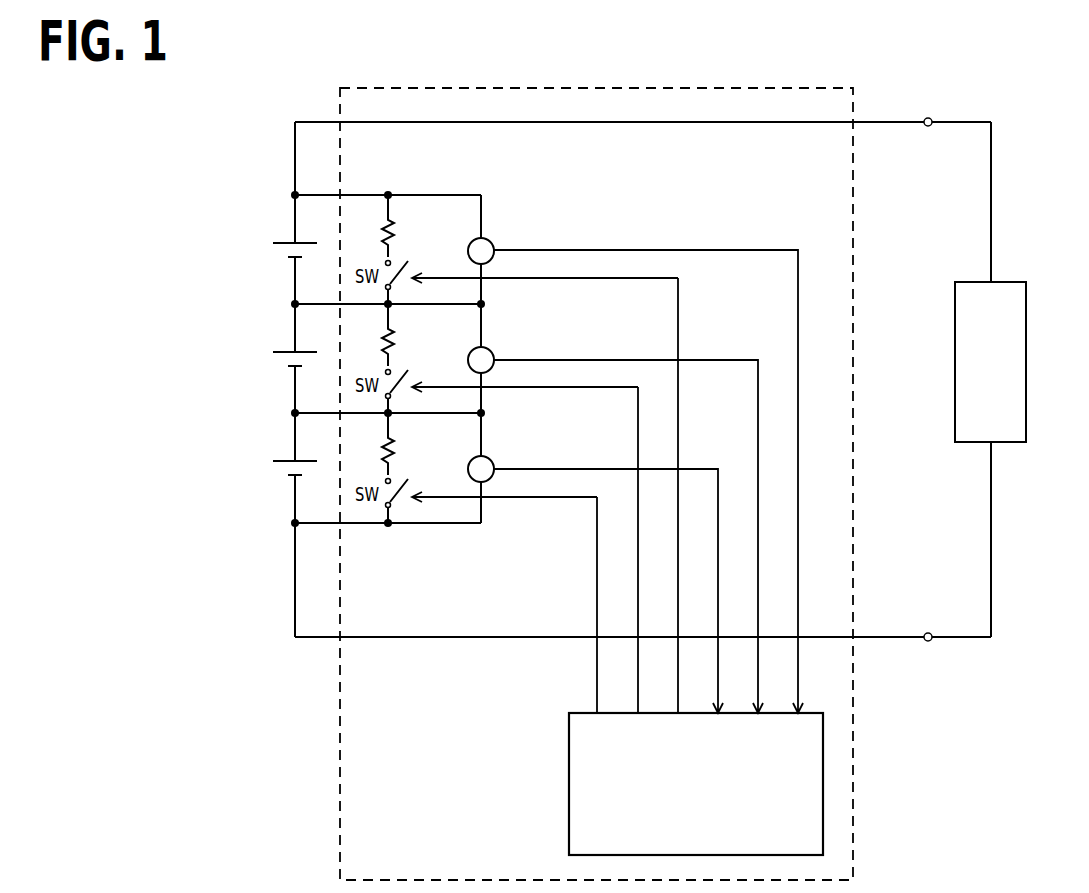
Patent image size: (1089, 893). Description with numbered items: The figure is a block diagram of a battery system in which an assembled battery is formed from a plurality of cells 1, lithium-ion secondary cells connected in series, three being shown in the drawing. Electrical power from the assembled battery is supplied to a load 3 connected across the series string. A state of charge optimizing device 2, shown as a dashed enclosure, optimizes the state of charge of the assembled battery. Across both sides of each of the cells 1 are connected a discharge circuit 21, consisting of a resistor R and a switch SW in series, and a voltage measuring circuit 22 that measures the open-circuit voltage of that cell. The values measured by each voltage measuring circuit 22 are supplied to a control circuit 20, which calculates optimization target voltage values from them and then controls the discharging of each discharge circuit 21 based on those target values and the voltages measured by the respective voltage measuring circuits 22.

The cell 1 is at (276, 242).
The state of charge optimizing device 2 is at (635, 88).
The load 3 is at (1027, 360).
The control circuit 20 is at (569, 782).
The discharge circuit 21 is at (400, 232).
The voltage measuring circuit 22 is at (489, 240).